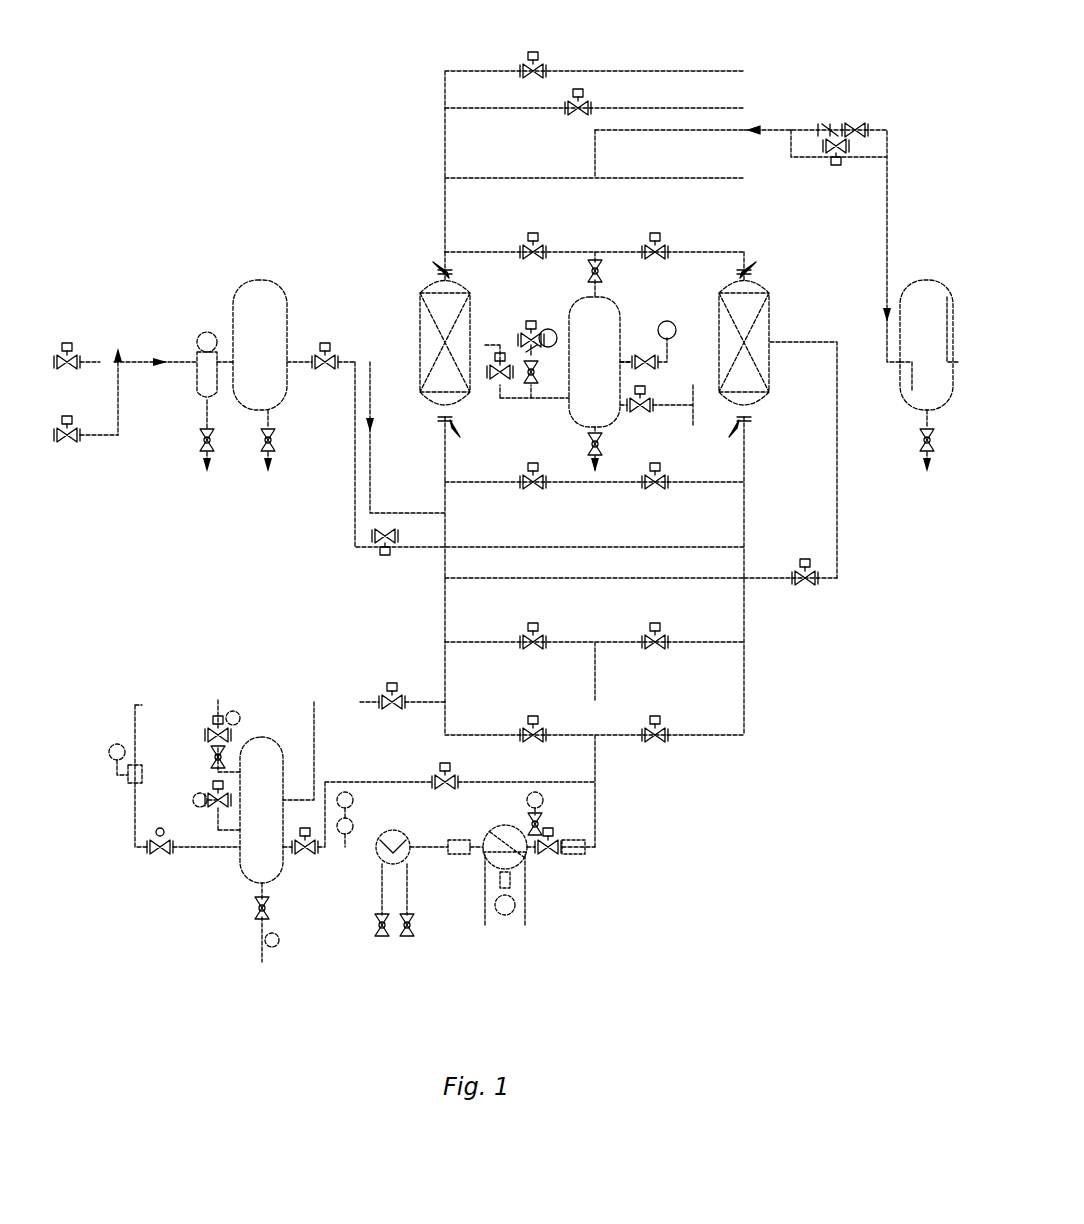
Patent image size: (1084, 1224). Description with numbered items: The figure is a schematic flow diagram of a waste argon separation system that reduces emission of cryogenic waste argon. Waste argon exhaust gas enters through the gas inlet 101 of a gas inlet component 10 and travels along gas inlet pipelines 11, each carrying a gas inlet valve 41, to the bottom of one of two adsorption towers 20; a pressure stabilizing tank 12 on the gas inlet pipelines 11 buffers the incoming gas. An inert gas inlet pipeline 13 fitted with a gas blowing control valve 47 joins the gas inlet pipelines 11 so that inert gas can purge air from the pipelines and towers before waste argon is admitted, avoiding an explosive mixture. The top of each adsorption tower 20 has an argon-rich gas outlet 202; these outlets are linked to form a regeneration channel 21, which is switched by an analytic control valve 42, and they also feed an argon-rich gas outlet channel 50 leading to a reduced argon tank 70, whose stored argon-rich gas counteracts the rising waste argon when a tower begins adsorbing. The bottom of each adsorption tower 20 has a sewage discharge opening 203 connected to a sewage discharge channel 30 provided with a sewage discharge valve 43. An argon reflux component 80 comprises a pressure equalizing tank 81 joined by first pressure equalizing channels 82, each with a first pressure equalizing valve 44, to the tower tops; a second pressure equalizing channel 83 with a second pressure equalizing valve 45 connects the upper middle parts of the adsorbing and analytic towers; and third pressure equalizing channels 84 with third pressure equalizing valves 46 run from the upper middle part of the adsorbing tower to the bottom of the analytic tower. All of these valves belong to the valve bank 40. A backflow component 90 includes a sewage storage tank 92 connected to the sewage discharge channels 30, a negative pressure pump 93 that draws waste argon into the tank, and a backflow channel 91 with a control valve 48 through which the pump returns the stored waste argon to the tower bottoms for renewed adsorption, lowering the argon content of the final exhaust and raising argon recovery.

The gas inlet component 10 is at (190, 270).
The gas inlet pipeline 11 is at (607, 482).
The pressure stabilizing tank 12 is at (234, 300).
The inert gas inlet pipeline 13 is at (95, 345).
The gas inlet 101 is at (124, 348).
The gas blowing control valve 47 is at (72, 446).
The adsorption tower 20 is at (435, 300).
The argon-rich gas outlet 202 is at (435, 262).
The sewage discharge opening 203 is at (462, 437).
The regeneration channel 21 is at (668, 108).
The sewage discharge channel 30 is at (745, 515).
The valve bank 40 is at (627, 27).
The gas inlet valve 41 is at (630, 535).
The analytic control valve 42 is at (582, 105).
The sewage discharge valve 43 is at (538, 652).
The first pressure equalizing valve 44 is at (640, 245).
The second pressure equalizing valve 45 is at (548, 64).
The third pressure equalizing valve 46 is at (815, 572).
The control valve 48 is at (668, 785).
The argon-rich gas outlet channel 50 is at (765, 128).
The reduced argon tank 70 is at (898, 395).
The argon reflux component 80 is at (240, 213).
The pressure equalizing tank 81 is at (565, 300).
The first pressure equalizing channel 82 is at (485, 250).
The second pressure equalizing channel 83 is at (430, 48).
The third pressure equalizing channel 84 is at (340, 300).
The backflow component 90 is at (752, 820).
The backflow channel 91 is at (735, 785).
The sewage storage tank 92 is at (283, 873).
The negative pressure pump 93 is at (515, 865).